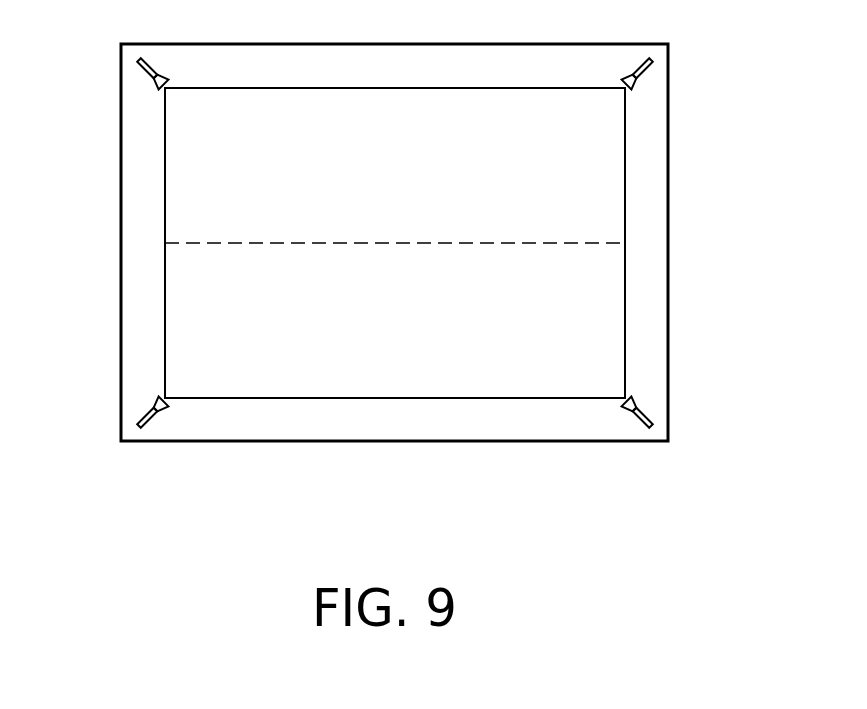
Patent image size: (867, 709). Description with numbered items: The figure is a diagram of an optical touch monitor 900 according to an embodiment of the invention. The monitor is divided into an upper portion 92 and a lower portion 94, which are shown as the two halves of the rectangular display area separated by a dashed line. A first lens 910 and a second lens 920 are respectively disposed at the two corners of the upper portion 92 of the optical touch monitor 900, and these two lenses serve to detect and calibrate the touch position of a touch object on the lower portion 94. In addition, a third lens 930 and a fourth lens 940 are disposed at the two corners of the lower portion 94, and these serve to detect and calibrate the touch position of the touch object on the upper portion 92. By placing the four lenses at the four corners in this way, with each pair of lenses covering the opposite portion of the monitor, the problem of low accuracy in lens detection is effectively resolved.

The optical touch monitor 900 is at (626, 224).
The upper portion 92 is at (395, 165).
The lower portion 94 is at (395, 320).
The first lens 910 is at (138, 62).
The second lens 920 is at (652, 62).
The third lens 930 is at (138, 424).
The fourth lens 940 is at (652, 424).